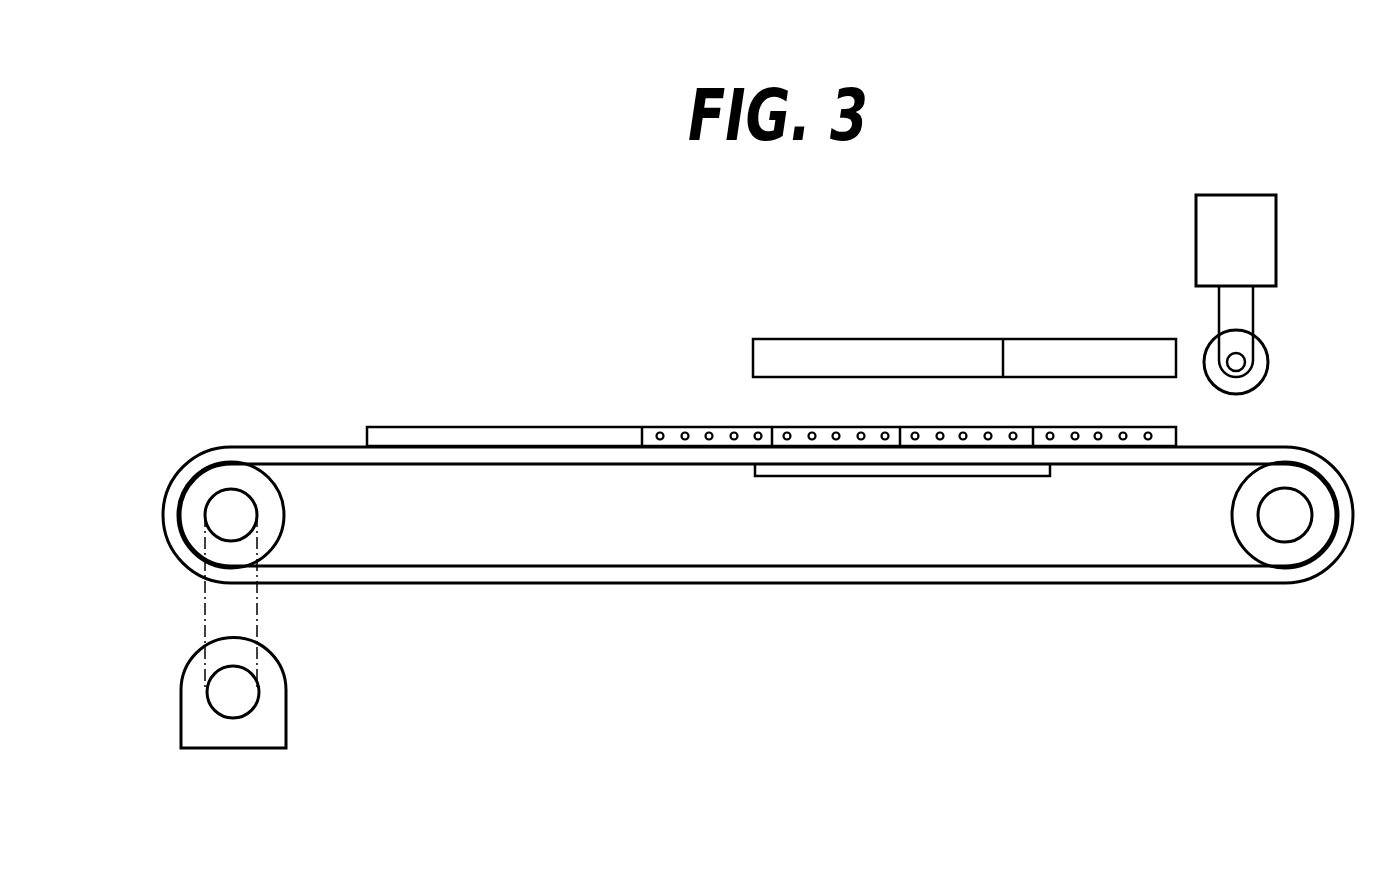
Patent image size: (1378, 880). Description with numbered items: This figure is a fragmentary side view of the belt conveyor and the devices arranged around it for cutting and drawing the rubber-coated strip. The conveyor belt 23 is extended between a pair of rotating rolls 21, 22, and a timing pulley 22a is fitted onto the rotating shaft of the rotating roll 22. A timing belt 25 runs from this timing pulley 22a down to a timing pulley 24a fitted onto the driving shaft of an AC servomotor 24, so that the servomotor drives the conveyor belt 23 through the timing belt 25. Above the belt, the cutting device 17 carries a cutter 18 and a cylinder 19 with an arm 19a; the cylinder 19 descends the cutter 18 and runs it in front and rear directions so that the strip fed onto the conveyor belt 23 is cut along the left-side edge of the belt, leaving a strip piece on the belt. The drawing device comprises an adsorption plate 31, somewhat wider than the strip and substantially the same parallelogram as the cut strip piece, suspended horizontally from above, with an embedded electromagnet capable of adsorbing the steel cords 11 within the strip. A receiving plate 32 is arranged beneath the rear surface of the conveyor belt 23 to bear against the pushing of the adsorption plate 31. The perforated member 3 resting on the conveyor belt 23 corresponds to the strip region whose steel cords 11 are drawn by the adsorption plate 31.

The platform / suction plate 3 is at (700, 427).
The steel cords 11 is at (787, 444).
The cutting device 17 is at (1186, 273).
The cutter 18 is at (1268, 360).
The cylinder 19 is at (1276, 230).
The actuator arm 19a is at (1253, 308).
The rotating roll 21 is at (1293, 550).
The rotating roll 22 is at (208, 486).
The timing pulley 22a is at (216, 517).
The conveyor belt 23 is at (565, 464).
The AC servomotor 24 is at (286, 710).
The timing pulley 24a is at (223, 698).
The timing belt 25 is at (205, 605).
The adsorption plate 31 is at (940, 338).
The receiving plate 32 is at (950, 478).